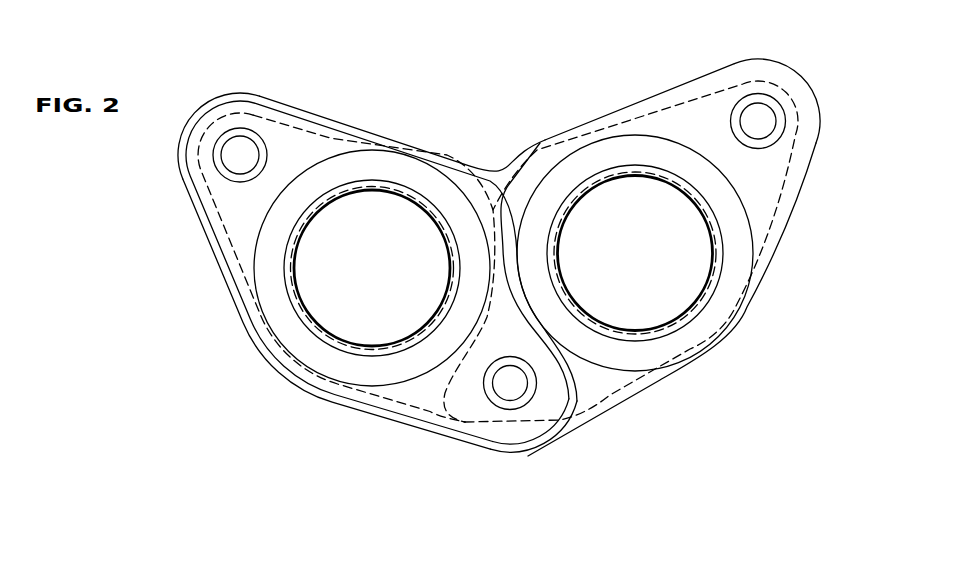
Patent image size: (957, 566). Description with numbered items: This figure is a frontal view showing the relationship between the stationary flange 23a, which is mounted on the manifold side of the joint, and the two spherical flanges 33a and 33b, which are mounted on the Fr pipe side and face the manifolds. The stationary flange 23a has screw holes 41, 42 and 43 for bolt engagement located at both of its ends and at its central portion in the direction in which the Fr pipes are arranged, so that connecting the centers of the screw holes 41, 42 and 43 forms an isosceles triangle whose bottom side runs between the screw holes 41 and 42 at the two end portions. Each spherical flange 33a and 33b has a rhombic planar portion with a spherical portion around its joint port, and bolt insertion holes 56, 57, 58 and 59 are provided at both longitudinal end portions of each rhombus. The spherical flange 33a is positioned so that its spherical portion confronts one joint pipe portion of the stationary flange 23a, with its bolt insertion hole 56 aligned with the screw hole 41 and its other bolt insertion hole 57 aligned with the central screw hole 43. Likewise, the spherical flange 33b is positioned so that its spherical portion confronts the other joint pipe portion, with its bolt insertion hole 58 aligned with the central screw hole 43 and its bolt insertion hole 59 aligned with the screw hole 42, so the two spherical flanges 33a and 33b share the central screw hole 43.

The stationary flange 23a is at (350, 130).
The spherical flange 33a is at (318, 112).
The spherical flange 33b is at (620, 106).
The screw hole 41 is at (240, 128).
The screw hole 42 is at (757, 94).
The screw hole 43 is at (514, 401).
The bolt insertion hole 56 is at (221, 174).
The bolt insertion hole 57 is at (490, 398).
The bolt insertion hole 58 is at (537, 381).
The bolt insertion hole 59 is at (784, 128).